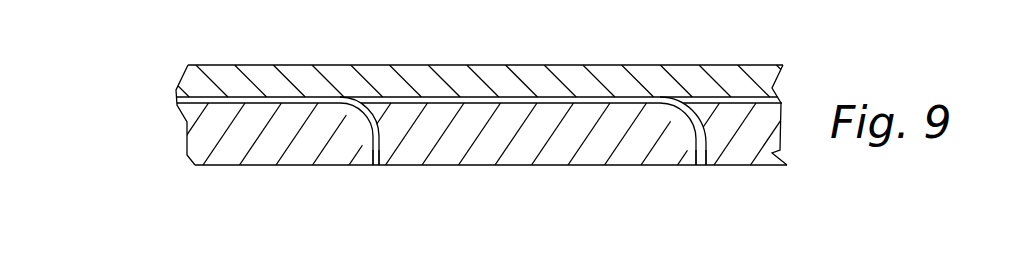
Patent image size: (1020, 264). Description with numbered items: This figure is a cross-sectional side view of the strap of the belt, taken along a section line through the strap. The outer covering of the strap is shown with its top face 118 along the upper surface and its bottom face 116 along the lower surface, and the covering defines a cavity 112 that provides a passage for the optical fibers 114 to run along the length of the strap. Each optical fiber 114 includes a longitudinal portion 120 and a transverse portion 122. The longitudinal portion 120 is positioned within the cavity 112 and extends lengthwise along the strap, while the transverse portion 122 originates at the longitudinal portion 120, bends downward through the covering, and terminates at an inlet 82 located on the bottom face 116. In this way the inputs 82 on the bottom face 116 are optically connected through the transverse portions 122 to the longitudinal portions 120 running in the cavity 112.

The input 82 is at (383, 179).
The cavity 112 is at (587, 97).
The optical fiber 114 is at (279, 112).
The bottom face 116 is at (752, 165).
The top face 118 is at (522, 65).
The longitudinal portion 120 is at (303, 103).
The transverse portion 122 is at (375, 130).